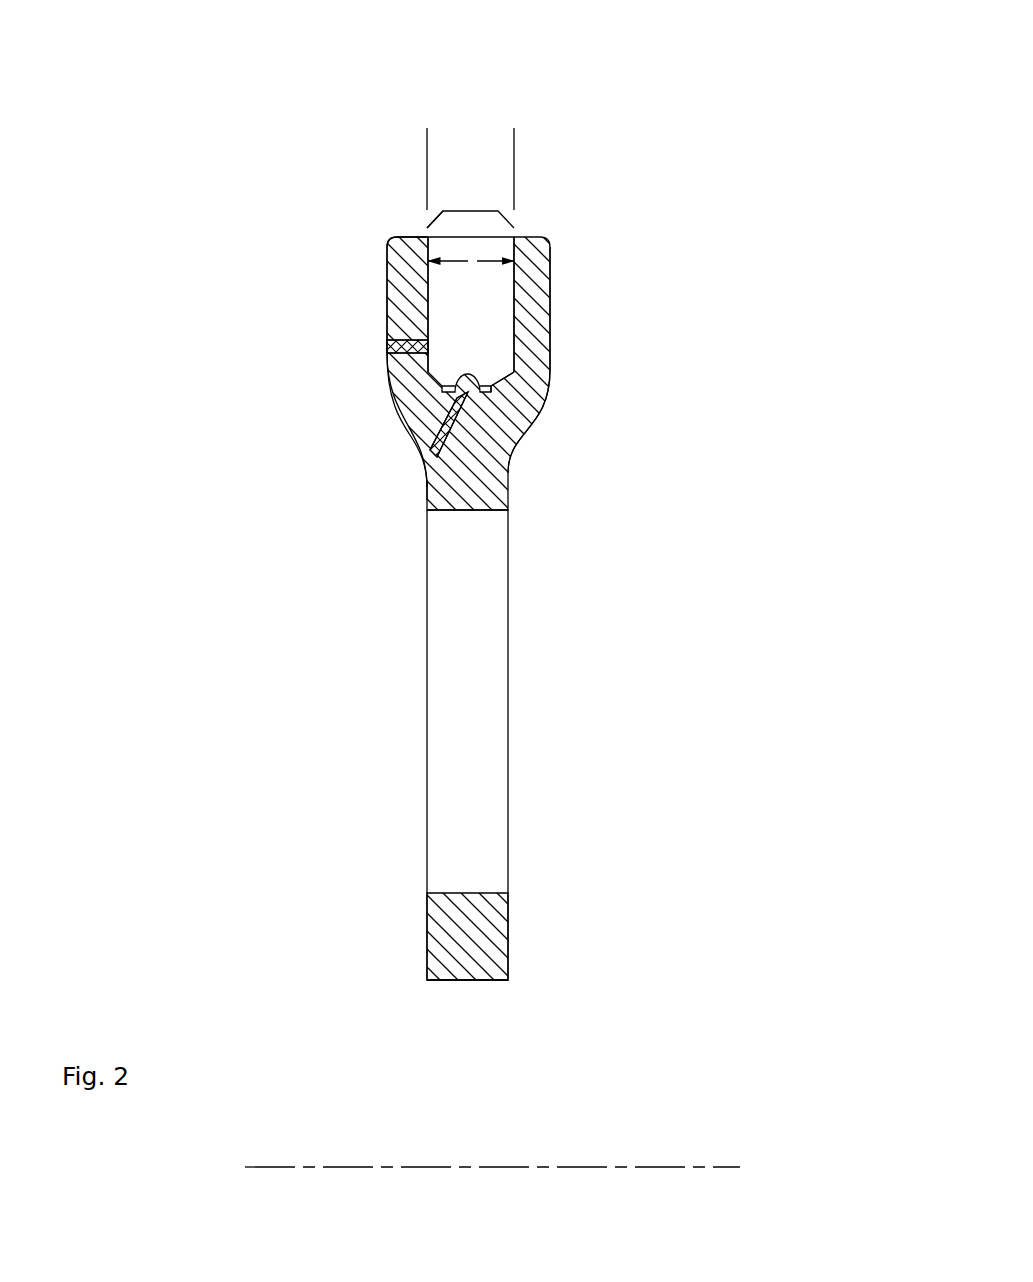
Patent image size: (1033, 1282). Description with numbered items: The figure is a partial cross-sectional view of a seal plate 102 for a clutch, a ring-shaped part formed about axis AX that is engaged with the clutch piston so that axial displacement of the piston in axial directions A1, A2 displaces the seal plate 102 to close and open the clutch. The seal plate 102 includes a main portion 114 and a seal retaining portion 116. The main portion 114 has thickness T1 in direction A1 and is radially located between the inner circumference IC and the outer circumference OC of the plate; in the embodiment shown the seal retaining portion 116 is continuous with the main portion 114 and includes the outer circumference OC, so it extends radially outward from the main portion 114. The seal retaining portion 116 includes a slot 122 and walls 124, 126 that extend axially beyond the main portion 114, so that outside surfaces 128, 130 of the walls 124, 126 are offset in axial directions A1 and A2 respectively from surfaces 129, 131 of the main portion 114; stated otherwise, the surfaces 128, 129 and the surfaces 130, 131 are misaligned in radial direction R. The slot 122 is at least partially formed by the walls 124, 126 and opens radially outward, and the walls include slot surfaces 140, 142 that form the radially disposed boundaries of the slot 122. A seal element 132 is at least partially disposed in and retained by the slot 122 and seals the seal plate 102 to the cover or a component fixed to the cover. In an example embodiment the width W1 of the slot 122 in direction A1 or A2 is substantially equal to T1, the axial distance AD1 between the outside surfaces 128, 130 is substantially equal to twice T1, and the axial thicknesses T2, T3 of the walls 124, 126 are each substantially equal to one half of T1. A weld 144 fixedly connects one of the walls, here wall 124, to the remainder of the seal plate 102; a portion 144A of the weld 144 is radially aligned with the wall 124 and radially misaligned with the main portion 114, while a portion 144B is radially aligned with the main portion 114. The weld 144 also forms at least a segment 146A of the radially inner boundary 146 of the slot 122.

The seal plate 102 is at (635, 113).
The main portion 114 is at (383, 665).
The seal retaining portion 116 is at (572, 387).
The slot 122 is at (420, 226).
The wall 124 is at (385, 287).
The wall 126 is at (552, 287).
The outside surface 128 is at (386, 340).
The surface 129 is at (427, 490).
The outside surface 130 is at (552, 365).
The surface 131 is at (508, 493).
The seal element 132 is at (468, 210).
The slot surface 140 is at (408, 318).
The slot surface 142 is at (513, 335).
The weld 144 is at (397, 417).
The portion of the weld 144A is at (399, 370).
The portion of the weld 144B is at (418, 449).
The radially inner boundary 146 is at (496, 378).
The segment 146A is at (493, 405).
The outer circumference OC is at (310, 147).
The width W1 is at (390, 145).
The thickness T1 is at (318, 935).
The axial thickness T2 is at (387, 261).
The axial thickness T3 is at (550, 261).
The axial distance AD1 is at (620, 303).
The inner circumference IC is at (472, 980).
The axis AX is at (530, 1167).
The radial direction R is at (742, 555).
The axial direction A1 is at (805, 753).
The axial direction A2 is at (810, 803).